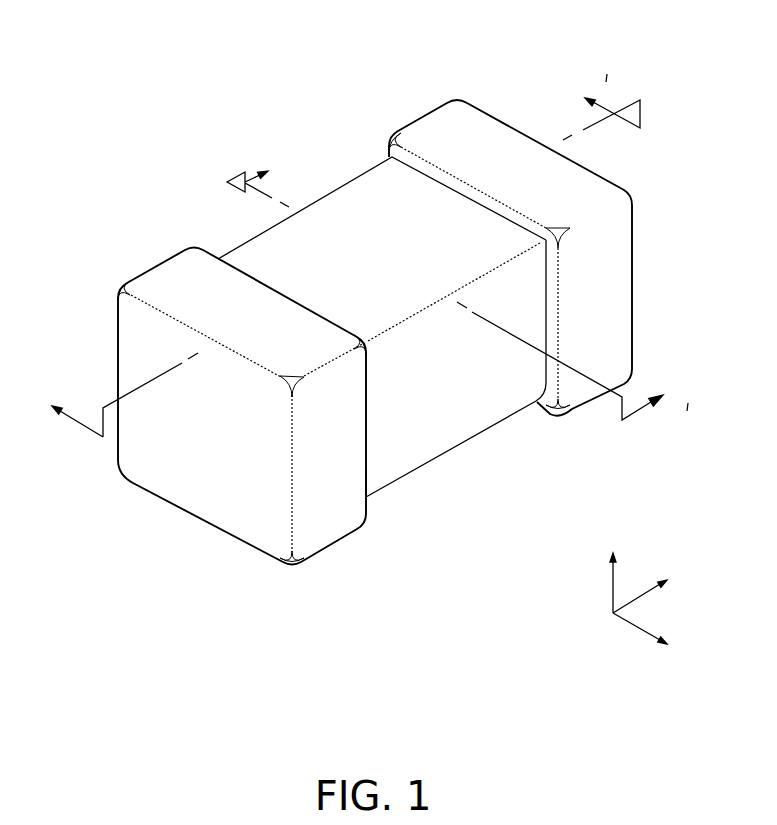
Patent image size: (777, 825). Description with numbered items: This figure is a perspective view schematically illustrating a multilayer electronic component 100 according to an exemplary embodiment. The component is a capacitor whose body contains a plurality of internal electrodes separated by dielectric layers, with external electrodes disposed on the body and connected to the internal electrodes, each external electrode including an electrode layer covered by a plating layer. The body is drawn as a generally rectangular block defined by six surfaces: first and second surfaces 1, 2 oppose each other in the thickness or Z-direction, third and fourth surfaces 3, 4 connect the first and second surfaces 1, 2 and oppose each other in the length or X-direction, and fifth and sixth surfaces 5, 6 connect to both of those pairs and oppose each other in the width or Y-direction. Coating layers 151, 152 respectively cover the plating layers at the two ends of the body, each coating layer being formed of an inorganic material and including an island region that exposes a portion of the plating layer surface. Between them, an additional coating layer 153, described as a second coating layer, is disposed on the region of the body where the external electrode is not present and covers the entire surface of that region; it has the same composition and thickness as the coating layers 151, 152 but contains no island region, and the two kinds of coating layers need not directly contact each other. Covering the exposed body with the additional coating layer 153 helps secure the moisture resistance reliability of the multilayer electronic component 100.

The multilayer electronic component 100 is at (125, 51).
The first surface 1 is at (416, 416).
The second surface 2 is at (391, 211).
The third surface 3 is at (213, 463).
The fourth surface 4 is at (582, 272).
The fifth surface 5 is at (472, 389).
The sixth surface 6 is at (338, 238).
The coating layer 151 is at (177, 282).
The coating layer 152 is at (432, 136).
The additional coating layer 153 is at (255, 263).